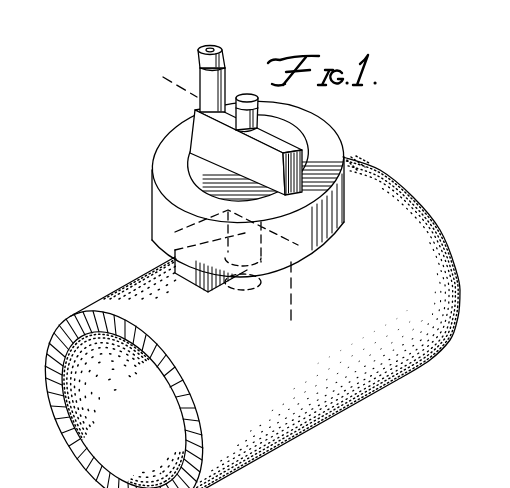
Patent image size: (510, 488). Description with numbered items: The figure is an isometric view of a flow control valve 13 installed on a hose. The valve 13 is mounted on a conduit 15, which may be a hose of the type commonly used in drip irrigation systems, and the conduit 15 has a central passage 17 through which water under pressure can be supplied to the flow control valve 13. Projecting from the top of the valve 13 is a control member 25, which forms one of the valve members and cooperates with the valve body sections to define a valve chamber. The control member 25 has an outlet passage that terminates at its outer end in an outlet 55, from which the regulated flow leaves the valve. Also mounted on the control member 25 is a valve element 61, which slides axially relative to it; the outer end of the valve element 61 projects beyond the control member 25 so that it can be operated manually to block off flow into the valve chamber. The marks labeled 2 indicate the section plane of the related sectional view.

The flow control valve 13 is at (151, 188).
The conduit 15 is at (407, 230).
The central passage 17 is at (121, 420).
The control member 25 is at (285, 143).
The outlet 55 is at (210, 44).
The valve element 61 is at (249, 93).
The section line 2 is at (175, 87).